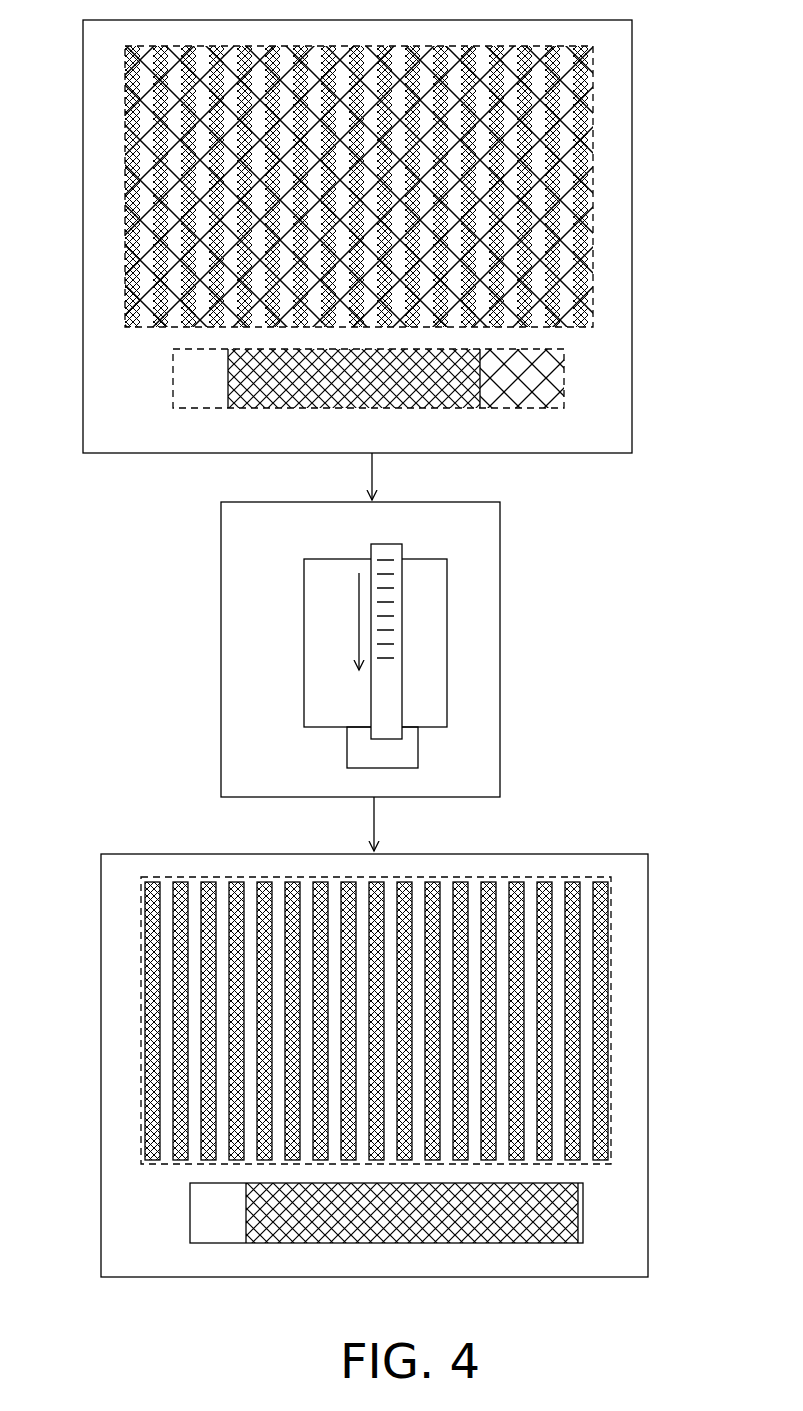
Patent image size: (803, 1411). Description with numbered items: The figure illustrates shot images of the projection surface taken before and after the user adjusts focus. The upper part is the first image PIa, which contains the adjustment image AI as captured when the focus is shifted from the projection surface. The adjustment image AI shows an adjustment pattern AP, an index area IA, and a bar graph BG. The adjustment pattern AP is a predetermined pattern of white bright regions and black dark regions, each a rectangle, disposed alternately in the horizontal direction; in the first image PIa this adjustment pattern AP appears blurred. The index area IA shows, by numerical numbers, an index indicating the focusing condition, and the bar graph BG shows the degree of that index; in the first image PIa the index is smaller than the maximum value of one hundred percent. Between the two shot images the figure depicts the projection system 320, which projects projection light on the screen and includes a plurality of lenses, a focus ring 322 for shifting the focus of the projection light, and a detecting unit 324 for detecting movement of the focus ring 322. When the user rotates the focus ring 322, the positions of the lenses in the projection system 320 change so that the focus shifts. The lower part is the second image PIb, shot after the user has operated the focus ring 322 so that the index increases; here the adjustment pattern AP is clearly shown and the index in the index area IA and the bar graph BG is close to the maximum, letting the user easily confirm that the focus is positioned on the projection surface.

The first image PIa is at (83, 102).
The second image PIb is at (101, 925).
The adjustment pattern AP is at (583, 46).
The adjustment image AI is at (609, 207).
The index area IA is at (173, 397).
The bar graph BG is at (595, 378).
The projection system 320 is at (318, 558).
The focus ring 322 is at (388, 544).
The detecting unit 324 is at (347, 757).